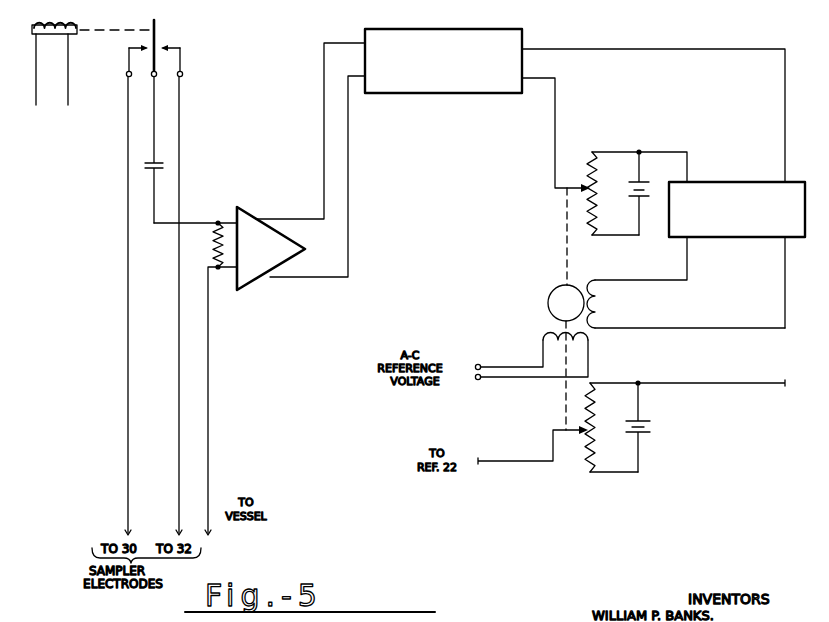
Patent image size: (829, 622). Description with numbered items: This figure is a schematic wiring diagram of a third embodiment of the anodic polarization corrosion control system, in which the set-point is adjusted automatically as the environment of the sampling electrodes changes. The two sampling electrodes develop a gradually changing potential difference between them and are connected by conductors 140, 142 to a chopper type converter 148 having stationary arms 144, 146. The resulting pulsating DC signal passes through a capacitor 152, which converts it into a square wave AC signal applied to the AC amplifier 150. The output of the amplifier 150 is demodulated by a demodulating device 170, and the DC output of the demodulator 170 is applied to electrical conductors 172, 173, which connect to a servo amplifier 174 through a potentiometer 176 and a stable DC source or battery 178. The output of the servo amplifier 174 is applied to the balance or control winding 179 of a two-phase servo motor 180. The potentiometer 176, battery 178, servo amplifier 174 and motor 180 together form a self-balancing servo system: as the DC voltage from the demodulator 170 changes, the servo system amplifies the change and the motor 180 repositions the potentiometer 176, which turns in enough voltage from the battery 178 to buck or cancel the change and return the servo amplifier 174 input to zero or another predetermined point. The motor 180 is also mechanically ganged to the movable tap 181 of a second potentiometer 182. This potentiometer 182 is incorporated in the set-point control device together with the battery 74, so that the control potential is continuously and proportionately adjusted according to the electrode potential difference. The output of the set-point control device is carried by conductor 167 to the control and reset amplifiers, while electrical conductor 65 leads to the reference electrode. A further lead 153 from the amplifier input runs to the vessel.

The conductor 140 is at (127, 385).
The conductor 142 is at (178, 360).
The stationary arm 144 is at (128, 62).
The stationary arm 146 is at (188, 64).
The chopper type converter 148 is at (172, 60).
The AC amplifier 150 is at (262, 192).
The capacitor 152 is at (146, 168).
The conductor to vessel 153 is at (208, 360).
The demodulating device 170 is at (428, 14).
The electrical conductor 172 is at (555, 132).
The electrical conductor 173 is at (670, 48).
The servo amplifier 174 is at (768, 190).
The potentiometer 176 is at (603, 186).
The battery 178 is at (633, 197).
The control winding 179 is at (605, 302).
The servo motor 180 is at (545, 290).
The conductor 167 is at (668, 385).
The battery 74 is at (630, 417).
The electrical conductor 65 is at (521, 462).
The movable tap 181 is at (562, 432).
The second potentiometer 182 is at (603, 434).